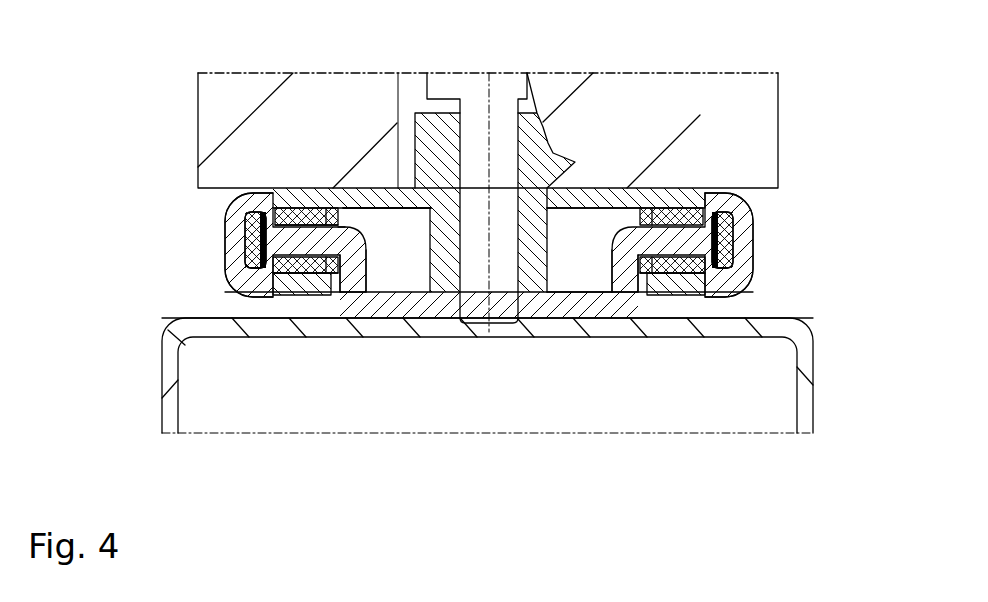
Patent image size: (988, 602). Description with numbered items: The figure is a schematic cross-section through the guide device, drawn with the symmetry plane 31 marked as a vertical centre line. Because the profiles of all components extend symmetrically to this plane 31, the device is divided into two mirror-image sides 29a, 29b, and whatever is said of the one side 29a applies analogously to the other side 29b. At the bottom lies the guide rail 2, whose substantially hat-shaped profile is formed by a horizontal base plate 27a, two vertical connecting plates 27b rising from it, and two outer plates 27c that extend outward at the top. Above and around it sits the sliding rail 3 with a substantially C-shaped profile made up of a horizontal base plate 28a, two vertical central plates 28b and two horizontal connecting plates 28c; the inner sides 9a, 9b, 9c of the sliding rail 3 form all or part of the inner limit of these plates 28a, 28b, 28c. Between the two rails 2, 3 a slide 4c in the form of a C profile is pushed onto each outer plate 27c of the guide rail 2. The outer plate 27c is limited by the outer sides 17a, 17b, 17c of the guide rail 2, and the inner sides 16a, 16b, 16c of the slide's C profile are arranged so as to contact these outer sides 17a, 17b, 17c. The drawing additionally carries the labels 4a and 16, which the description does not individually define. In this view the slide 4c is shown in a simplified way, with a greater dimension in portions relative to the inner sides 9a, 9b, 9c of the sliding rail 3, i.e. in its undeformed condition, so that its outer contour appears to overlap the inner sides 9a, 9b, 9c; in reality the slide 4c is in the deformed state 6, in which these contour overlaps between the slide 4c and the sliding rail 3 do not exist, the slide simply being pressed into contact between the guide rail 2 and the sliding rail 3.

The guide rail 2 is at (424, 312).
The sliding rail 3 is at (232, 208).
The outer sealing ring 4a is at (753, 228).
The slide 4c is at (243, 240).
The deformed state 6 is at (128, 152).
The inner side of the sliding rail 9a is at (362, 210).
The inner side of the sliding rail 9b is at (252, 268).
The inner side of the sliding rail 9c is at (280, 278).
The seal element 16 is at (240, 217).
The inner side of the C profile 16a is at (300, 212).
The inner side of the C profile 16b is at (330, 229).
The inner side of the C profile 16c is at (332, 264).
The outer side of the guide rail 17a is at (310, 206).
The outer side of the guide rail 17b is at (243, 227).
The outer side of the guide rail 17c is at (341, 283).
The horizontal base plate 27a is at (538, 313).
The vertical connecting plate 27b is at (358, 295).
The outer plate 27c is at (292, 206).
The horizontal base plate 28a is at (385, 178).
The vertical central plate 28b is at (230, 253).
The horizontal connecting plate 28c is at (290, 296).
The side of the guide device 29a is at (360, 381).
The side of the guide device 29b is at (603, 344).
The symmetry plane 31 is at (490, 97).